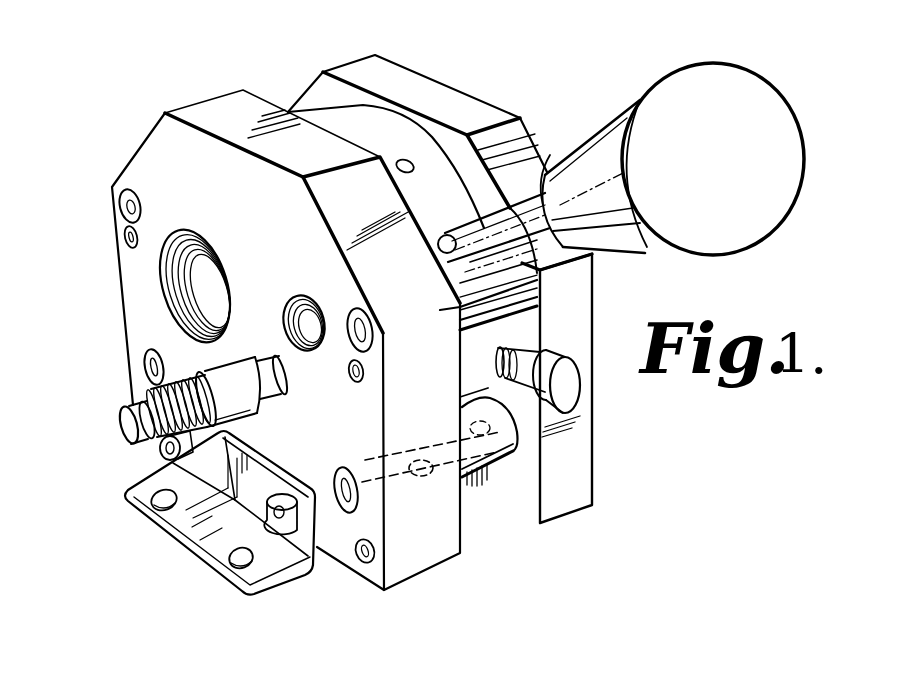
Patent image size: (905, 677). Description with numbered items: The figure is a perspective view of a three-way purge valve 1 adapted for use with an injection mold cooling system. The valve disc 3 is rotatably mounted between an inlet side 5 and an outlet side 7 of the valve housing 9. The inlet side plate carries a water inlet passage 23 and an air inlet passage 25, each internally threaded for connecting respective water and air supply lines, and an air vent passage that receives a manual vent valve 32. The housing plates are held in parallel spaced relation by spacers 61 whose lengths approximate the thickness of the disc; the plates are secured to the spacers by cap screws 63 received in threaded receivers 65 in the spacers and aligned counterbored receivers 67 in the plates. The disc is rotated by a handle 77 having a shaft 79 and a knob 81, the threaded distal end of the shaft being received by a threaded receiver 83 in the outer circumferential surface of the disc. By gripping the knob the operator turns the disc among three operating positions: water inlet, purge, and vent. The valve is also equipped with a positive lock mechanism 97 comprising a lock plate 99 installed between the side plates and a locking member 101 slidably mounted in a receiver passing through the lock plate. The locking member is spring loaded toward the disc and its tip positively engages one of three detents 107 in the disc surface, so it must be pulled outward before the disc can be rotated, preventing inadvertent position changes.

The three-way purge valve 1 is at (90, 121).
The valve disc 3 is at (345, 104).
The inlet side 5 is at (204, 100).
The outlet side 7 is at (352, 66).
The valve housing 9 is at (104, 250).
The water inlet passage 23 is at (210, 279).
The air inlet passage 25 is at (304, 320).
The manual vent valve 32 is at (122, 420).
The spacers 61 is at (474, 292).
The cap screws 63 is at (125, 194).
The threaded receivers 65 is at (478, 420).
The counterbored receivers 67 is at (437, 468).
The handle 77 is at (738, 58).
The shaft 79 is at (548, 158).
The knob 81 is at (590, 138).
The threaded receiver 83 is at (446, 234).
The positive lock mechanism 97 is at (575, 326).
The lock plate 99 is at (470, 335).
The locking member 101 is at (578, 376).
The detents 107 is at (408, 160).